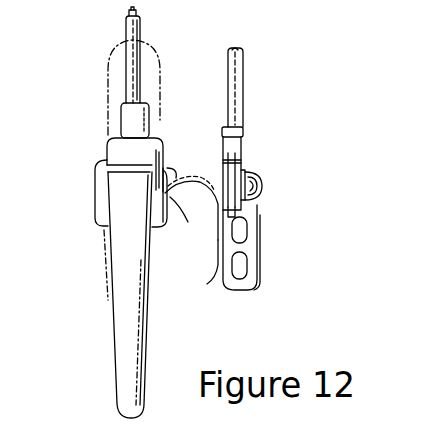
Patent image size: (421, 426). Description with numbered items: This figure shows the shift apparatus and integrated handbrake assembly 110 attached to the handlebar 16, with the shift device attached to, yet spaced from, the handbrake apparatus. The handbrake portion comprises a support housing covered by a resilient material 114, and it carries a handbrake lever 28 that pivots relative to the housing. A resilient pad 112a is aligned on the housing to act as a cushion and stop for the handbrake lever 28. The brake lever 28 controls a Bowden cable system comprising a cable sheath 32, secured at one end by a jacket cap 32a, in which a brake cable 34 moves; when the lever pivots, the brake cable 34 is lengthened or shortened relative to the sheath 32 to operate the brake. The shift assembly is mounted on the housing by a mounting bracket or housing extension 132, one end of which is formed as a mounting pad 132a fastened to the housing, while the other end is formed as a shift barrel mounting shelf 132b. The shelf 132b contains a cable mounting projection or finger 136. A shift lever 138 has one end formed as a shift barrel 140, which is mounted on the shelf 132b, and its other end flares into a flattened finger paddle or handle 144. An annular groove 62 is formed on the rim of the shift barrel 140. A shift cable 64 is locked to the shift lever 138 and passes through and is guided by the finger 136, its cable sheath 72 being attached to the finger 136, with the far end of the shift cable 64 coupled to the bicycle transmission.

The handlebar 16 is at (108, 93).
The handbrake lever 28 is at (125, 328).
The cable sheath 32 is at (134, 35).
The jacket cap 32a is at (138, 124).
The brake cable 34 is at (130, 13).
The annular groove 62 is at (246, 160).
The shift cable 64 is at (236, 153).
The cable sheath 72 is at (234, 85).
The shift apparatus and integrated handbrake assembly 110 is at (187, 255).
The resilient pad 112a is at (110, 166).
The resilient material 114 is at (102, 178).
The mounting bracket or housing extension 132 is at (189, 178).
The mounting pad 132a is at (192, 223).
The shift barrel mounting shelf 132b is at (219, 275).
The cable mounting projection or finger 136 is at (240, 132).
The shift lever 138 is at (257, 212).
The shift barrel 140 is at (248, 170).
The finger paddle or handle 144 is at (253, 264).